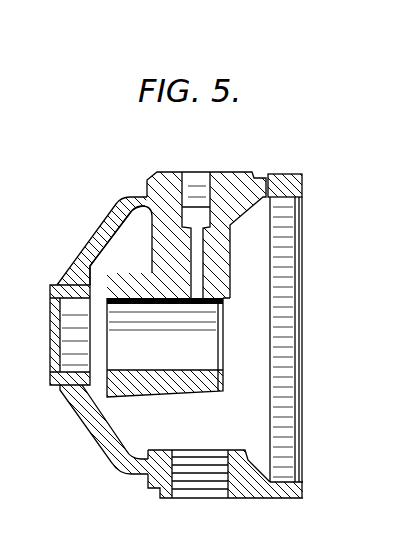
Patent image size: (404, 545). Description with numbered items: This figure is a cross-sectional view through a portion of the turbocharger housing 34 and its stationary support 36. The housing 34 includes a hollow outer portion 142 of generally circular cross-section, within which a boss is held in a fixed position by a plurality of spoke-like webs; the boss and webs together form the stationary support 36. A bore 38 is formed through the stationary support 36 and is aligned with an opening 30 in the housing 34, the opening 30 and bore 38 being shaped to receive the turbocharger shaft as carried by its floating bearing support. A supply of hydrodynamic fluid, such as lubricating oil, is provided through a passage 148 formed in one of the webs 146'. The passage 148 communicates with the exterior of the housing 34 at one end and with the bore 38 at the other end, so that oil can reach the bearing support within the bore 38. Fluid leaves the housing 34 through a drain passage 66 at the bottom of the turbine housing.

The opening 30 is at (77, 302).
The turbocharger housing 34 is at (128, 196).
The stationary support 36 is at (140, 395).
The bore 38 is at (151, 371).
The drain passage 66 is at (199, 450).
The hollow outer portion 142 is at (101, 437).
The web 146' is at (121, 245).
The passage 148 is at (201, 261).